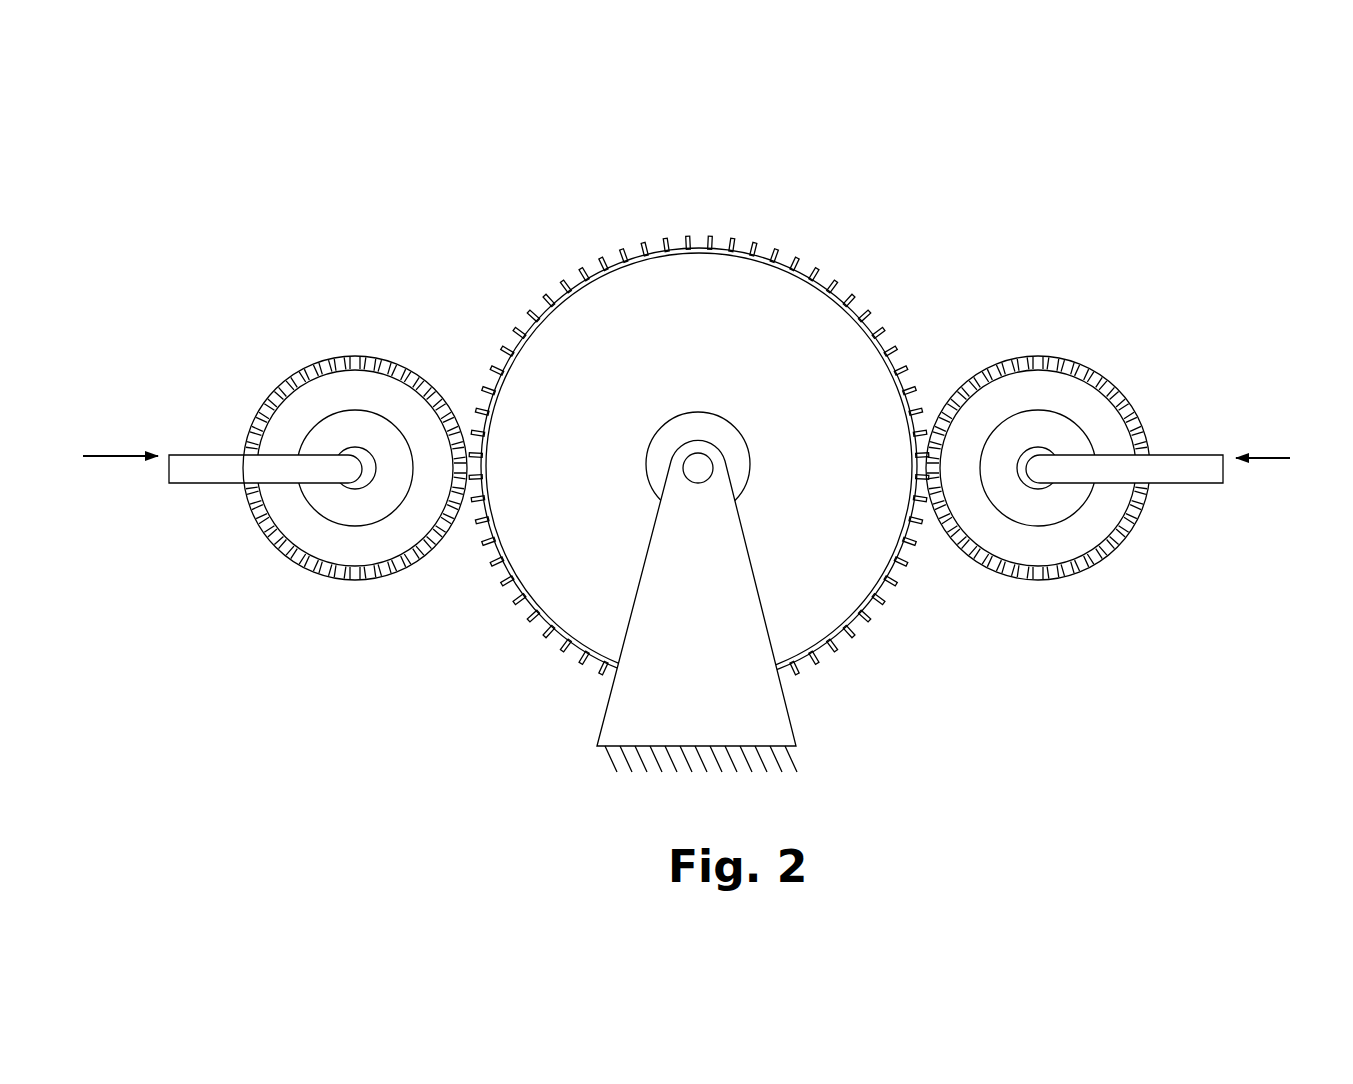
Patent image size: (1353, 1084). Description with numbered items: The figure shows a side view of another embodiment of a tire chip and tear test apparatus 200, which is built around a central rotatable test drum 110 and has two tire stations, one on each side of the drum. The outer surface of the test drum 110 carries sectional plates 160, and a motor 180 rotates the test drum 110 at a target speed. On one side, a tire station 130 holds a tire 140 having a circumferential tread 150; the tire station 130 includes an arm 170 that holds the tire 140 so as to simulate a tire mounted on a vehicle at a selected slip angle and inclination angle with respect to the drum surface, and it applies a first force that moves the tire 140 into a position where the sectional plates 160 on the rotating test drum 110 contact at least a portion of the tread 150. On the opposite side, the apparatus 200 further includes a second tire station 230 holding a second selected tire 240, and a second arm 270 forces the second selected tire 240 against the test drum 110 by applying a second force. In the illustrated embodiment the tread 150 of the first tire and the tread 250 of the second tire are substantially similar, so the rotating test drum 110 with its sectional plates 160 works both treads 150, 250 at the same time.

The tire chip and tear test apparatus 200 is at (487, 192).
The test drum 110 is at (745, 292).
The sectional plates 160 is at (876, 330).
The motor 180 is at (658, 478).
The tread 250 is at (657, 697).
The second tire station 230 is at (322, 342).
The second selected tire 240 is at (315, 405).
The second arm 270 is at (203, 474).
The tire station 130 is at (1089, 296).
The tire 140 is at (1077, 393).
The tread 150 is at (1107, 553).
The arm 170 is at (1178, 467).